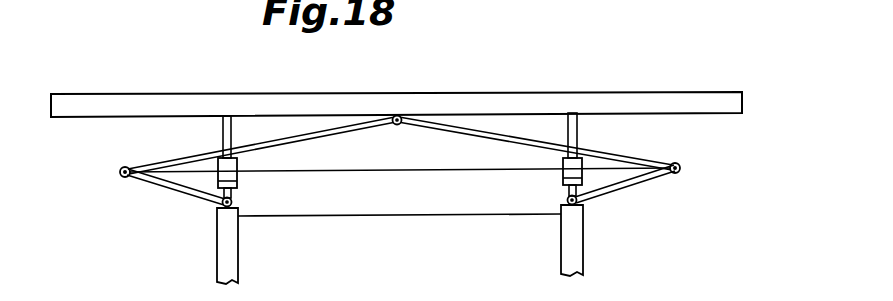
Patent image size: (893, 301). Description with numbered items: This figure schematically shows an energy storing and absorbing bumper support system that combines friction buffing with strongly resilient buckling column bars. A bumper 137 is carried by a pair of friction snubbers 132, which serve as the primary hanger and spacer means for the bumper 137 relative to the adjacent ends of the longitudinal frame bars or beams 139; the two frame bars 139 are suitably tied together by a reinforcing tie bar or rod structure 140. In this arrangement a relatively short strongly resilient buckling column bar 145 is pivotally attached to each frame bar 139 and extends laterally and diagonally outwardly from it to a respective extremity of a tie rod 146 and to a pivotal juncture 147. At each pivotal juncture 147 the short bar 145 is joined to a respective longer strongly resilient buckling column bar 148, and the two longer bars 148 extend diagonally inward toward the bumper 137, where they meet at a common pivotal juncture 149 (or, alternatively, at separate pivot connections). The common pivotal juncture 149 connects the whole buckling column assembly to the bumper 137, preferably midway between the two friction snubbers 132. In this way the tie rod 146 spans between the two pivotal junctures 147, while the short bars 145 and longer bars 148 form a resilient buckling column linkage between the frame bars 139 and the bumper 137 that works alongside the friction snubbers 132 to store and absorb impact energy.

The bumper 137 is at (676, 63).
The common pivotal juncture 149 is at (400, 117).
The longer strongly resilient buckling column bar 148 is at (490, 137).
The tie rod 146 is at (369, 169).
The pivotal juncture 147 is at (680, 167).
The short strongly resilient buckling column bar 145 is at (178, 189).
The friction snubber 132 is at (243, 178).
The frame bar 139 is at (221, 256).
The tie bar or rod structure 140 is at (418, 216).